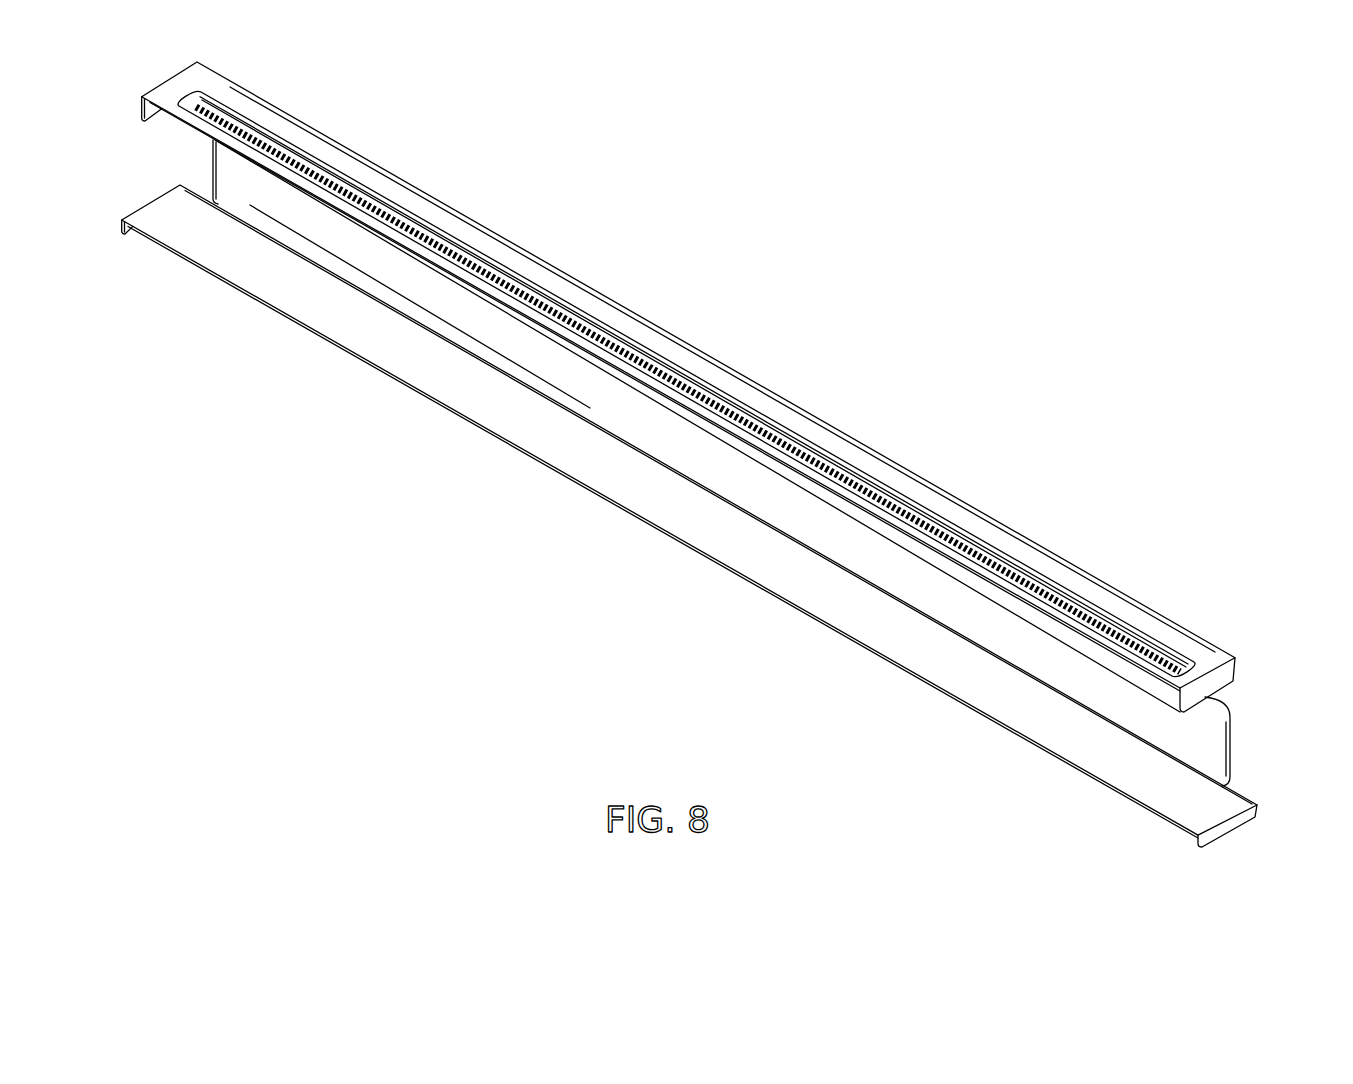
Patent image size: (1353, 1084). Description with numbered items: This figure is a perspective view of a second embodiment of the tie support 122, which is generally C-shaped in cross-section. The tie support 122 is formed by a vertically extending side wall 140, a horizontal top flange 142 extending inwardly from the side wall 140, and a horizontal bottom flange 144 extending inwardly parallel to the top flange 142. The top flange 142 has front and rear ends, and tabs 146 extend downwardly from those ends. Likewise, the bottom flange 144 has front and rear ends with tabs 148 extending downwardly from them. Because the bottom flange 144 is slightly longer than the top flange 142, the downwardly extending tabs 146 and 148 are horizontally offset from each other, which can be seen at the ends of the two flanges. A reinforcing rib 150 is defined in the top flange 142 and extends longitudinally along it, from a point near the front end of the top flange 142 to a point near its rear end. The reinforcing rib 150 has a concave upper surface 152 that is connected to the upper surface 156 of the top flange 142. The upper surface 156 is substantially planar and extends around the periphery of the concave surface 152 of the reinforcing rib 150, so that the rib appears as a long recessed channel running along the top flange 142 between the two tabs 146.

The tie support 122 is at (722, 500).
The side wall 140 is at (497, 332).
The top flange 142 is at (743, 390).
The bottom flange 144 is at (689, 561).
The tabs 146 is at (1222, 681).
The tabs 148 is at (1210, 848).
The reinforcing rib 150 is at (686, 383).
The concave upper surface 152 is at (694, 382).
The upper surface 156 is at (927, 518).